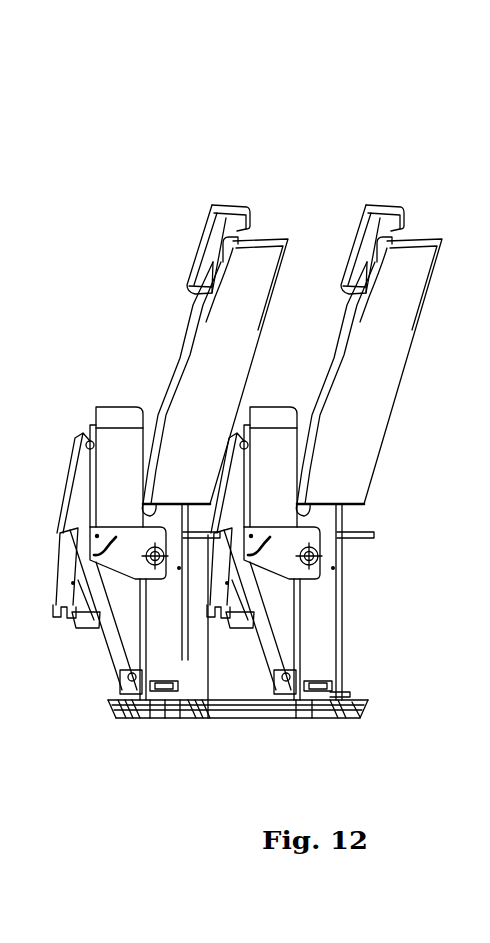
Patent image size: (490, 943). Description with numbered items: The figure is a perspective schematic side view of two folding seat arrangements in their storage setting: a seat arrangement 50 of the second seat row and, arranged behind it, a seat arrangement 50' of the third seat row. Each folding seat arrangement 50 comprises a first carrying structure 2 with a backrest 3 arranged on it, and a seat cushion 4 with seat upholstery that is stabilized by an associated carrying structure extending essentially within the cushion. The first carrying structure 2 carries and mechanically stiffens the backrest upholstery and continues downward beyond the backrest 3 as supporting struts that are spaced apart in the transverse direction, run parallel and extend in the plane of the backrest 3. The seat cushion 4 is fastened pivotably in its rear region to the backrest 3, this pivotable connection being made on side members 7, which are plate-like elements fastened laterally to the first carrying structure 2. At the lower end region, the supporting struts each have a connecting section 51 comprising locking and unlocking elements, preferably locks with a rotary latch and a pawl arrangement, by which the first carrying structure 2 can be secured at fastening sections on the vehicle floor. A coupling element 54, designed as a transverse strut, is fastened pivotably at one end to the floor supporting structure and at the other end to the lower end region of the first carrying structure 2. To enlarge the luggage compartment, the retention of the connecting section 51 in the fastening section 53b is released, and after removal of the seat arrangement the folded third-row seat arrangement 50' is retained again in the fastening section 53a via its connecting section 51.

The first carrying structure 2 is at (362, 503).
The backrest 3 is at (229, 371).
The seat cushion 4 is at (118, 407).
The side members 7 is at (293, 570).
The folding seat arrangement 50 is at (191, 181).
The seat arrangement of the third seat row 50' is at (360, 177).
The connecting section 51 is at (333, 687).
The fastening section 53a is at (322, 692).
The fastening section 53b is at (165, 718).
The coupling element 54 is at (113, 647).